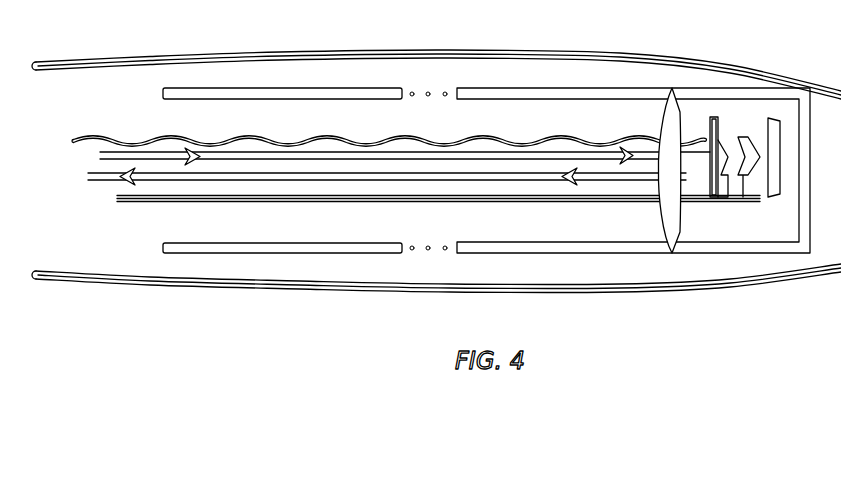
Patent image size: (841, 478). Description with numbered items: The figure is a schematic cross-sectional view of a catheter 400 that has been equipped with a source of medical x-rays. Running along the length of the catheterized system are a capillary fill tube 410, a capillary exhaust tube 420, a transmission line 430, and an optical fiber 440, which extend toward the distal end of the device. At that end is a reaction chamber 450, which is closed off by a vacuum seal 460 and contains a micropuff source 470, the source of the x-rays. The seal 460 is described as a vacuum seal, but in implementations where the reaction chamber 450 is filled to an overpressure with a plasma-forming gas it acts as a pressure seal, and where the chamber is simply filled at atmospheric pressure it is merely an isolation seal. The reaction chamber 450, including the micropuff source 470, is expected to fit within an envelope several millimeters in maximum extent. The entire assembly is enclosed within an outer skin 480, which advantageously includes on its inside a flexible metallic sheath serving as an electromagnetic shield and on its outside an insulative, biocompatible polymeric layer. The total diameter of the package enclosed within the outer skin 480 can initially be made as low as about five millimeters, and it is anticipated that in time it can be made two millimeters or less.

The catheter 400 is at (436, 290).
The capillary fill tube 410 is at (298, 152).
The capillary exhaust tube 420 is at (213, 181).
The transmission line 430 is at (285, 202).
The optical fiber 440 is at (147, 137).
The reaction chamber 450 is at (737, 78).
The vacuum seal 460 is at (660, 130).
The micropuff source 470 is at (748, 125).
The outer skin 480 is at (730, 293).